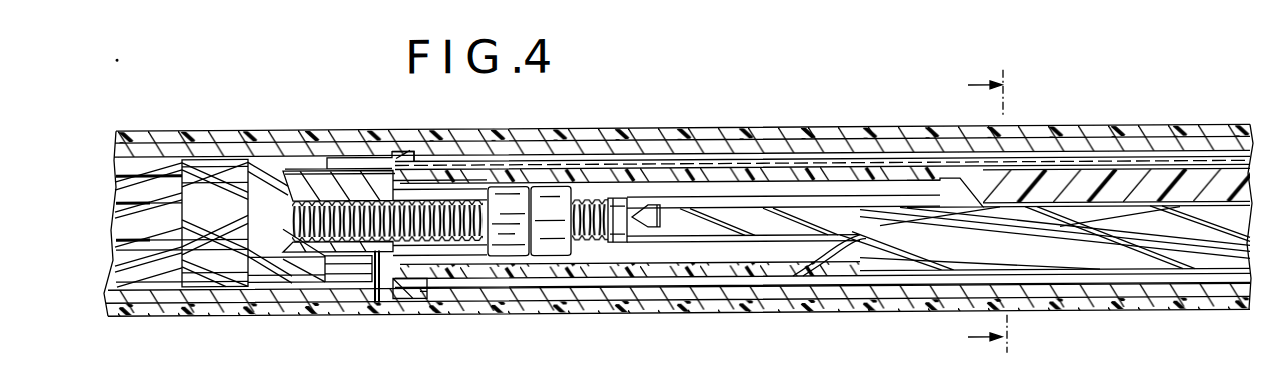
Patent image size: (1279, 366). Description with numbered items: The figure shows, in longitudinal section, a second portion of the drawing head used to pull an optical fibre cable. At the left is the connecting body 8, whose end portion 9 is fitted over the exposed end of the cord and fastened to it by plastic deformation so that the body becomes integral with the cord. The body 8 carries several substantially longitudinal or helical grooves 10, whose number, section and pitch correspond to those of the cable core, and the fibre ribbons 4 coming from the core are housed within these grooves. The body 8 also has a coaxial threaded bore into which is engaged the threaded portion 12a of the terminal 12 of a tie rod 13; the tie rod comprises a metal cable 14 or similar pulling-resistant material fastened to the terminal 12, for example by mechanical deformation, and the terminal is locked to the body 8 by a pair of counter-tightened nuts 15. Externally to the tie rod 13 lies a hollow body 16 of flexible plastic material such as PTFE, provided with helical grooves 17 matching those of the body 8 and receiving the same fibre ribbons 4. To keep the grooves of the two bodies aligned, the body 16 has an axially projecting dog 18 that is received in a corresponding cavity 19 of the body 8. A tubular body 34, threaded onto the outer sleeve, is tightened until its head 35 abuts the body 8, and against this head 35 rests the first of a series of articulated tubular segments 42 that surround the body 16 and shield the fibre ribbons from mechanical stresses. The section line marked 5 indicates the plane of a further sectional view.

The fibre ribbons 4 is at (523, 165).
The section line 5- 5 is at (974, 213).
The connecting body 8 is at (272, 211).
The end portion 9 is at (113, 230).
The helical grooves 10 is at (350, 160).
The terminal 12 is at (613, 203).
The threaded portion 12a is at (447, 203).
The tie rod 13 is at (797, 194).
The metal cable 14 is at (948, 207).
The counter-tightened nuts 15 is at (557, 259).
The hollow body 16 is at (1087, 189).
The helical grooves 17 is at (1038, 263).
The axially projecting dog 18 is at (412, 321).
The cavity 19 is at (372, 305).
The tubular body 34 is at (177, 148).
The head 35 is at (400, 153).
The tubular segments 42 is at (722, 151).